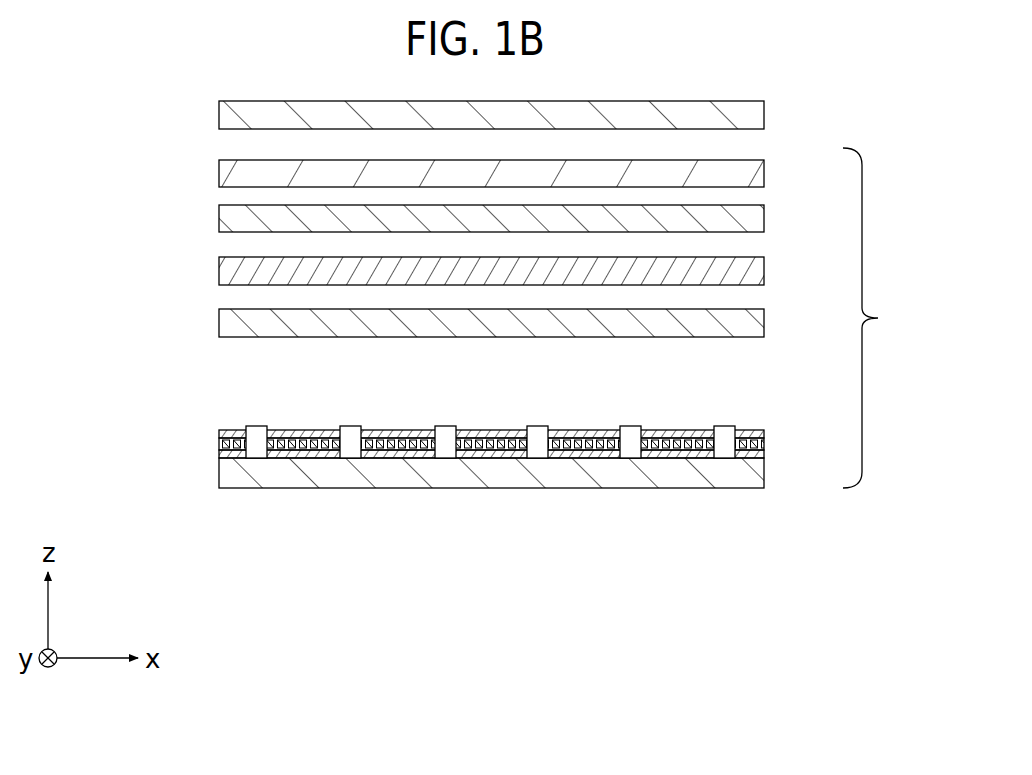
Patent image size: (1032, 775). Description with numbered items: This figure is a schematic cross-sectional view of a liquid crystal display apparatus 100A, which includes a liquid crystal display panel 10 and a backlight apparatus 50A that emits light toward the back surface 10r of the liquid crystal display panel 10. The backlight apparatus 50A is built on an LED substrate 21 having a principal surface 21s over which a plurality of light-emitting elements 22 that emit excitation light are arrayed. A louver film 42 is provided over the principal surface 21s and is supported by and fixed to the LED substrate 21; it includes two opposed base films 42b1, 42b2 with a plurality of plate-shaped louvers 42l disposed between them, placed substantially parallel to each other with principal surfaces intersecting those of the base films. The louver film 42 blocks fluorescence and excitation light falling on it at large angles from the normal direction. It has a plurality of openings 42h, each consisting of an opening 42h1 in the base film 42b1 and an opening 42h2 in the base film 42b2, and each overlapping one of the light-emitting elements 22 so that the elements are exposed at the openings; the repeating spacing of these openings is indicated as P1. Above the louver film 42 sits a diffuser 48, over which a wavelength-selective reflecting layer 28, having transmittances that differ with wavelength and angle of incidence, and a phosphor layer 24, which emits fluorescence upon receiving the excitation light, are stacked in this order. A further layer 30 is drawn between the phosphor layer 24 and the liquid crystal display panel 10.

The liquid crystal display apparatus 100A is at (853, 67).
The liquid crystal display panel 10 is at (723, 113).
The back surface 10r is at (231, 133).
The first adhesive layer 30 is at (723, 175).
The phosphor layer 24 is at (723, 220).
The wavelength-selective reflecting layer 28 is at (723, 277).
The diffuser 48 is at (723, 325).
The backlight apparatus 50A is at (889, 318).
The LED substrate 21 is at (745, 478).
The principal surface 21s is at (722, 448).
The light-emitting element 22 is at (627, 432).
The louver film 42 is at (403, 440).
The base film 42b2 is at (222, 433).
The louver 42l is at (222, 444).
The base film 42b1 is at (222, 454).
The opening 42h is at (415, 368).
The opening 42h1 is at (341, 428).
The opening 42h2 is at (349, 440).
The pitch of holes P1 is at (444, 425).